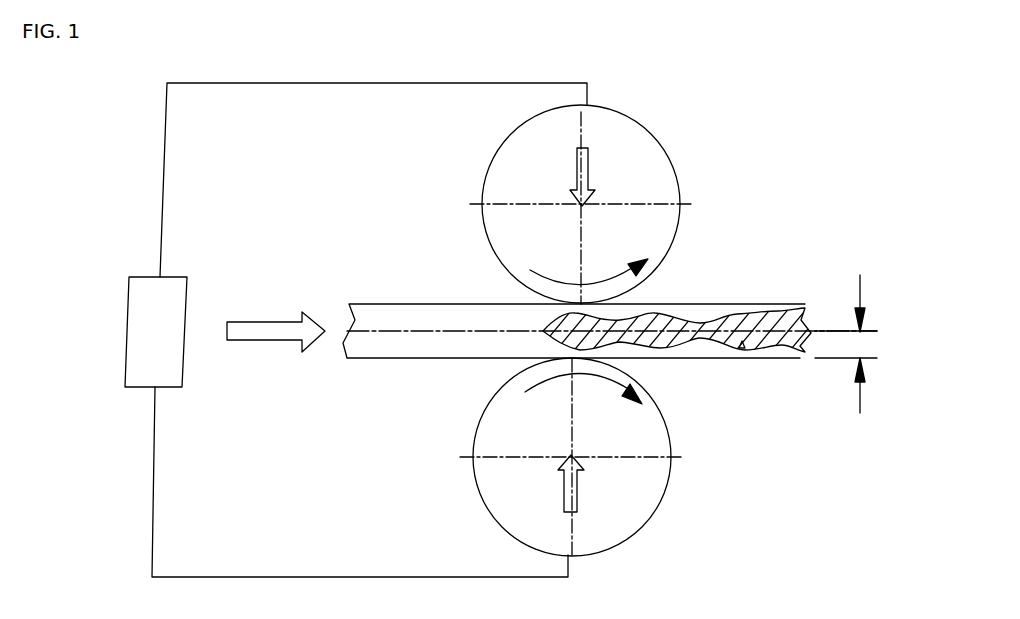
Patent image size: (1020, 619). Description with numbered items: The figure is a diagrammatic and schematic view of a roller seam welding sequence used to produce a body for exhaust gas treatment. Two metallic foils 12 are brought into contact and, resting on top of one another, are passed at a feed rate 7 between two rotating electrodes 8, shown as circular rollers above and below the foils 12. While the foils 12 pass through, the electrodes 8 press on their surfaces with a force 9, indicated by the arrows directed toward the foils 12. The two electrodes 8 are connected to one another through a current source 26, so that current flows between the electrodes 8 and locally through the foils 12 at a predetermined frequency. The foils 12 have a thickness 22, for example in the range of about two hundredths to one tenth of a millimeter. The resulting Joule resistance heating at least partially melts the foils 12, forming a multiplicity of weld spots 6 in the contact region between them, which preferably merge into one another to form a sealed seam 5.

The sealed seam 5 is at (742, 349).
The weld spots 6 is at (740, 323).
The feed rate 7 is at (262, 322).
The rotating electrodes 8 is at (667, 152).
The force 9 is at (587, 155).
The metallic foils 12 is at (428, 350).
The thickness 22 is at (860, 345).
The current source 26 is at (137, 308).